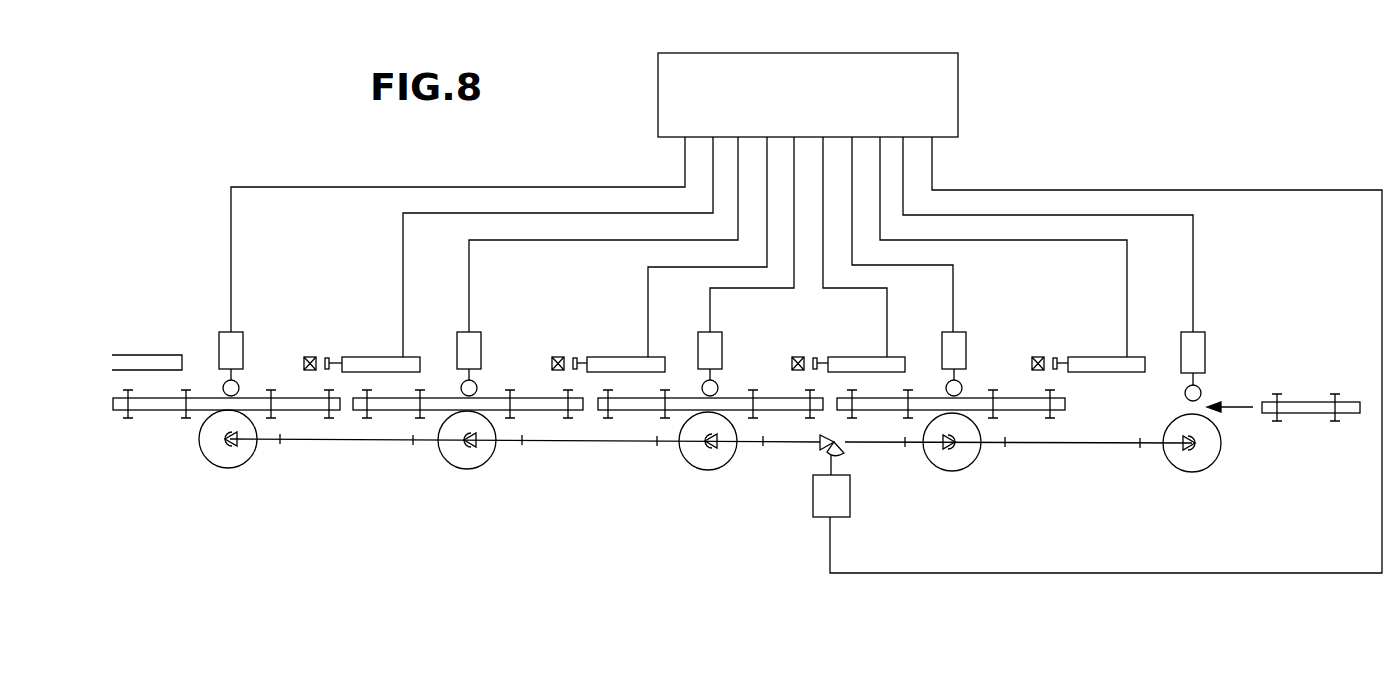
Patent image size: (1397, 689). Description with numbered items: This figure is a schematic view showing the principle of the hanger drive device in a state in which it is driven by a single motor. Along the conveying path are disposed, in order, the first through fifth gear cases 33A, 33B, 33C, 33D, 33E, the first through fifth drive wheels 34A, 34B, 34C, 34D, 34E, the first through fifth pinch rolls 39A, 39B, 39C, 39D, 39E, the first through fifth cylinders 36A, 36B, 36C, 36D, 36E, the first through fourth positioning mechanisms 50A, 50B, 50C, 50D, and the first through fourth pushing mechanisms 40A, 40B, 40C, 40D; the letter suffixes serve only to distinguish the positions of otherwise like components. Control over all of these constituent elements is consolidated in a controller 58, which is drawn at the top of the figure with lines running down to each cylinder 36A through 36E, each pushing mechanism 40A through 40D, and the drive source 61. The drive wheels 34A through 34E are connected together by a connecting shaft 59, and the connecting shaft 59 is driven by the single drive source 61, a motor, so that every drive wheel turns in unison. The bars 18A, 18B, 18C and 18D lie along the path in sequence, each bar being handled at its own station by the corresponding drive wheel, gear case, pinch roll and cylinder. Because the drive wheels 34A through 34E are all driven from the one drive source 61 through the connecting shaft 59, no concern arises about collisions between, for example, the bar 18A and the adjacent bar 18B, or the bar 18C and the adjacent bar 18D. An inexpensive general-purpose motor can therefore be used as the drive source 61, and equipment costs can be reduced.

The controller 58 is at (958, 90).
The fifth cylinder 36E is at (243, 343).
The fourth cylinder 36D is at (482, 343).
The third cylinder 36C is at (724, 346).
The second cylinder 36B is at (966, 340).
The first cylinder 36A is at (1204, 343).
The fifth pinch roll 39E is at (238, 386).
The fourth pinch roll 39D is at (476, 386).
The third pinch roll 39C is at (718, 386).
The second pinch roll 39B is at (962, 386).
The first pinch roll 39A is at (1202, 392).
The fourth positioning mechanism 50D is at (313, 356).
The third positioning mechanism 50C is at (561, 356).
The second positioning mechanism 50B is at (799, 356).
The first positioning mechanism 50A is at (1040, 356).
The fourth pushing mechanism 40D is at (365, 357).
The third pushing mechanism 40C is at (604, 357).
The second pushing mechanism 40B is at (840, 353).
The first pushing mechanism 40A is at (1078, 357).
The bar 18D is at (310, 412).
The bar 18C is at (549, 412).
The bar 18B is at (773, 412).
The bar 18A is at (1035, 412).
The fifth gear case 33E is at (228, 449).
The fourth gear case 33D is at (467, 450).
The third gear case 33C is at (708, 450).
The second gear case 33B is at (949, 452).
The first gear case 33A is at (1189, 452).
The fifth drive wheel 34E is at (245, 461).
The fourth drive wheel 34D is at (484, 462).
The third drive wheel 34C is at (723, 465).
The second drive wheel 34B is at (970, 463).
The first drive wheel 34A is at (1212, 467).
The connecting shaft 59 is at (390, 442).
The drive source 61 is at (816, 516).